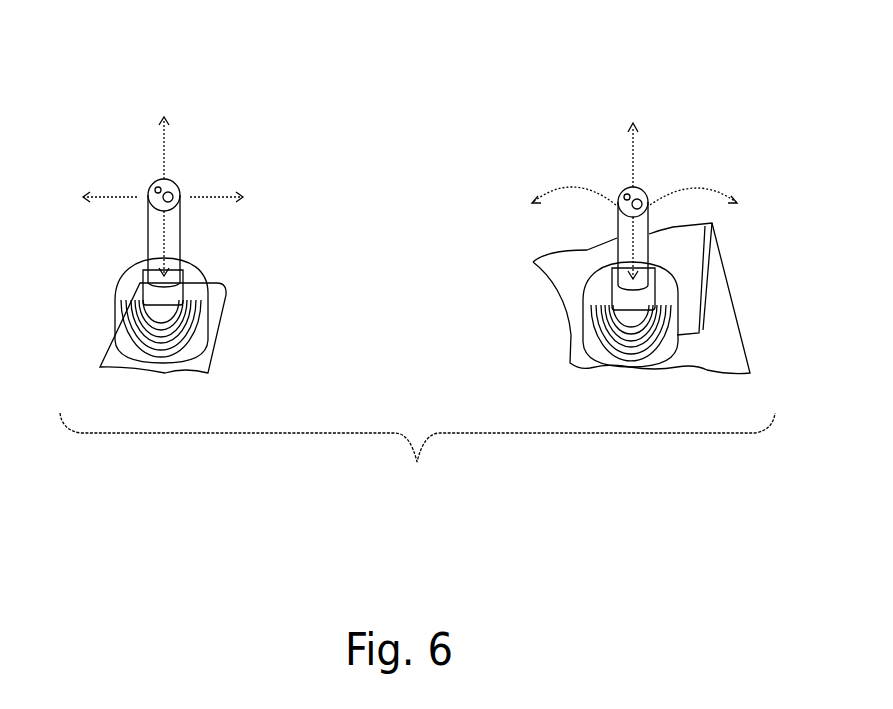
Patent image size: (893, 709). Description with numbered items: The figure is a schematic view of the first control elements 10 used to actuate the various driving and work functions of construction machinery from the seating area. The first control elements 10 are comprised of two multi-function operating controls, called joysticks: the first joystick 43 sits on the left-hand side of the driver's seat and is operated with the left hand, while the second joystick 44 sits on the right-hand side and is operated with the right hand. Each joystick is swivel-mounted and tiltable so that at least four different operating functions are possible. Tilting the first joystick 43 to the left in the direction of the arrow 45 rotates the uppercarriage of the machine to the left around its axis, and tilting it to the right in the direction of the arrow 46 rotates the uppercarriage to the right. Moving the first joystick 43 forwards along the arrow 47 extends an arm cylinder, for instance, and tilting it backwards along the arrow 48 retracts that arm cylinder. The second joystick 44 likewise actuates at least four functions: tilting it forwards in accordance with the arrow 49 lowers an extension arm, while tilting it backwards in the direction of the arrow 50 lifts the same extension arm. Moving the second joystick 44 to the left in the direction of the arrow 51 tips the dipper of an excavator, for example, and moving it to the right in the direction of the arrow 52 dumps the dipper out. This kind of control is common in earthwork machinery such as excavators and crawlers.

The first control elements 10 is at (417, 454).
The first joystick 43 is at (212, 98).
The second joystick 44 is at (683, 100).
The arrow 45 is at (110, 198).
The arrow 46 is at (220, 197).
The arrow 47 is at (164, 133).
The arrow 48 is at (164, 232).
The arrow 49 is at (632, 150).
The arrow 50 is at (663, 257).
The arrow 51 is at (563, 188).
The arrow 52 is at (707, 193).